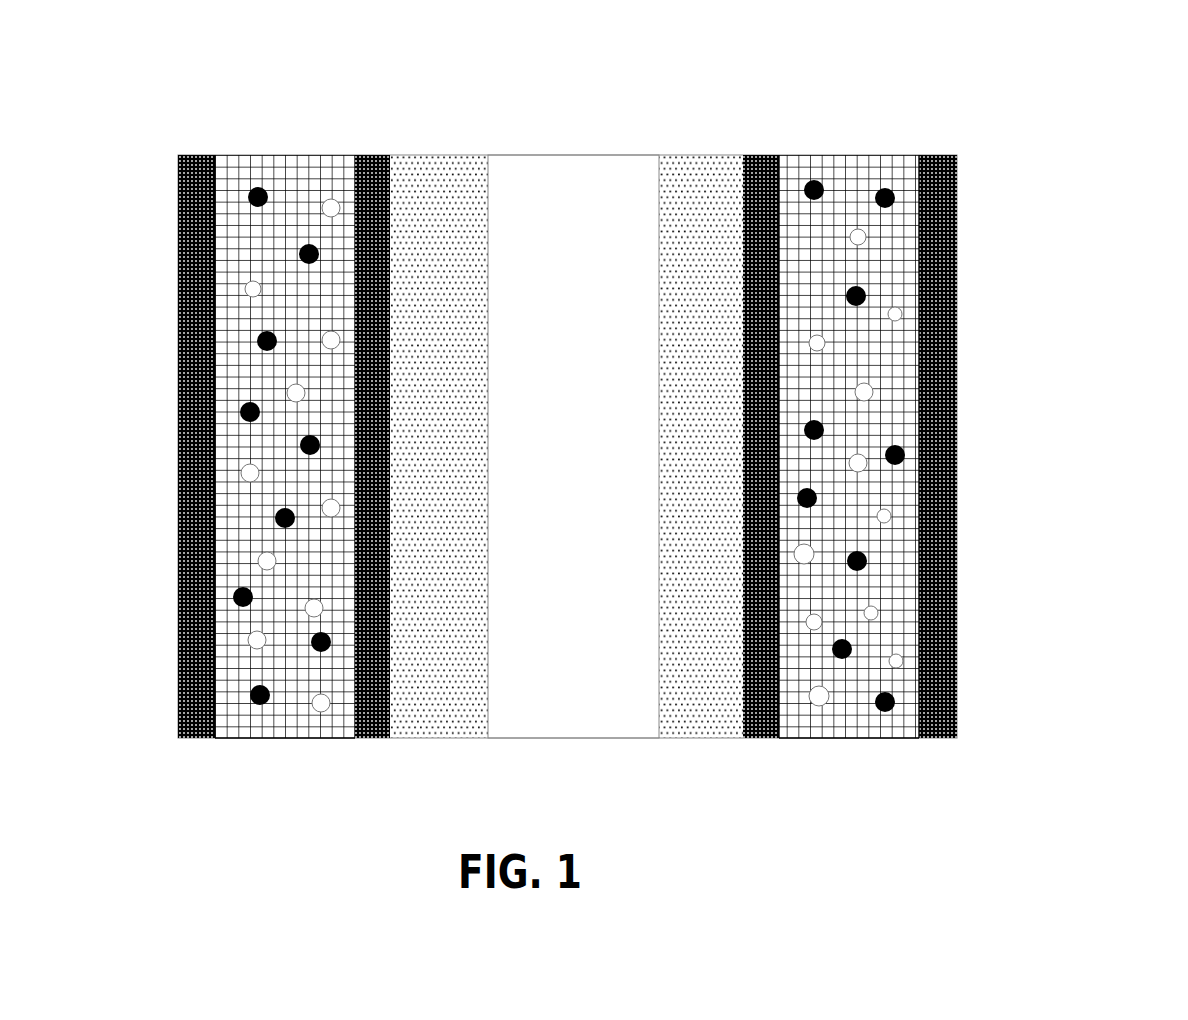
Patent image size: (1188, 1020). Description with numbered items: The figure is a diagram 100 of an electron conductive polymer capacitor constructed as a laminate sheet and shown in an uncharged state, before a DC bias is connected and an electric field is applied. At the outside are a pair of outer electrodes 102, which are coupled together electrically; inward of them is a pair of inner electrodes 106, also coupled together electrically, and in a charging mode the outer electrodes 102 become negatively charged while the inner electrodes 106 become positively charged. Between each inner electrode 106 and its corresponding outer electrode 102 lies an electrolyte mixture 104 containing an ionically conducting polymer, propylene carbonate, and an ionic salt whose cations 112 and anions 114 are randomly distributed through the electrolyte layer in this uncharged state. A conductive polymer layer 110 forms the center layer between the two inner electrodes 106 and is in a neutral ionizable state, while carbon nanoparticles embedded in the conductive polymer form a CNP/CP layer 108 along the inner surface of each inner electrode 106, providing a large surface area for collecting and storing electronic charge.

The diagram 100 is at (1075, 70).
The outer electrodes 102 is at (197, 146).
The electrolyte mixture 104 is at (254, 150).
The inner electrodes 106 is at (373, 150).
The carbon nanoparticles-conductive polymer layer 108 is at (433, 150).
The conductive polymer layer 110 is at (555, 147).
The cations 112 is at (254, 338).
The anions 114 is at (263, 550).